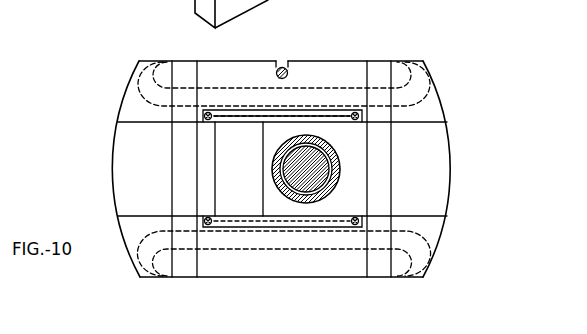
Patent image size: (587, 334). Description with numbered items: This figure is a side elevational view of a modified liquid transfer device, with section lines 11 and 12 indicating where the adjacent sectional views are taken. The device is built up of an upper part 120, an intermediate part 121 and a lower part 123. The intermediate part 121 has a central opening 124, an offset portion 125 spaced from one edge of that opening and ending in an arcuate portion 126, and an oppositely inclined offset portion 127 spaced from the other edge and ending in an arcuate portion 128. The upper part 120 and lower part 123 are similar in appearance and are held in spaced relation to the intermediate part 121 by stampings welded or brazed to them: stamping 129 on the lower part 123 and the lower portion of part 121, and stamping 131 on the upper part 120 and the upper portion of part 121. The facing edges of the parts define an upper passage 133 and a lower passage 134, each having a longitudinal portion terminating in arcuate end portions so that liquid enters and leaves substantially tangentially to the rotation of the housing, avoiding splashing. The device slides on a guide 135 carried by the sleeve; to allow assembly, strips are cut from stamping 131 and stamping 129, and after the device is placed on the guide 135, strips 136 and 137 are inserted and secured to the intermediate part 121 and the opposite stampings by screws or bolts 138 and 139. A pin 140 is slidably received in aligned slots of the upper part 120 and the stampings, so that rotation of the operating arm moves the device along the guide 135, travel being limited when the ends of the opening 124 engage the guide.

The section line 11- 11 is at (118, 300).
The section line 12- 12 is at (306, 27).
The upper part 120 is at (350, 72).
The intermediate part 121 is at (437, 149).
The lower part 123 is at (289, 258).
The opening 124 is at (216, 155).
The offset portion 125 is at (377, 190).
The arcuate portion 126 is at (449, 133).
The oppositely inclined offset portion 127 is at (188, 186).
The arcuate portion 128 is at (112, 185).
The stamping 129 is at (132, 233).
The stamping 131 is at (127, 104).
The upper passage 133 is at (234, 88).
The lower passage 134 is at (252, 250).
The guide 135 is at (343, 148).
The strip 136 is at (260, 110).
The strip 137 is at (316, 226).
The screw or bolt 138 is at (208, 111).
The screw or bolt 139 is at (208, 226).
The pin 140 is at (285, 64).